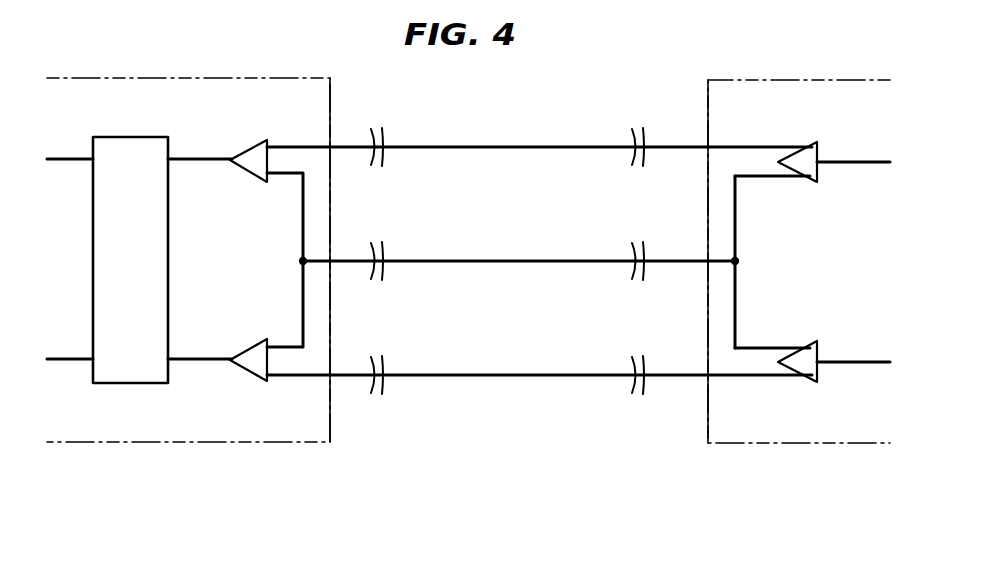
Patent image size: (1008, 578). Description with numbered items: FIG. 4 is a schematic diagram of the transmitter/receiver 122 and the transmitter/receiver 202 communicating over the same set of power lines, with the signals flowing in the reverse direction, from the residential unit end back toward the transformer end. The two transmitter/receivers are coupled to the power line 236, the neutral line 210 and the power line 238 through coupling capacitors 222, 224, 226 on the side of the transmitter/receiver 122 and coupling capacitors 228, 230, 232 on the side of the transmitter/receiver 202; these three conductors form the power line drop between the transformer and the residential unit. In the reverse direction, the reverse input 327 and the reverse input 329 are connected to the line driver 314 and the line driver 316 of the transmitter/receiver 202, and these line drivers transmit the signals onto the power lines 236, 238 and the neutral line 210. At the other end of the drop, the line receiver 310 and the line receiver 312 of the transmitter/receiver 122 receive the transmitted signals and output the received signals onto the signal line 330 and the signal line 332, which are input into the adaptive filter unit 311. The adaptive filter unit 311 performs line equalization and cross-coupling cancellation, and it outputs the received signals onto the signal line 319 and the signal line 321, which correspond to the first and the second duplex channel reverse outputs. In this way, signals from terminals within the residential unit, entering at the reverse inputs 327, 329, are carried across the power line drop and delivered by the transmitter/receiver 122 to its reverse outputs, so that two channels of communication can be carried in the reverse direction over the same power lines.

The transmitter/receiver 122 is at (256, 442).
The transmitter/receiver 202 is at (785, 443).
The adaptive filter unit 311 is at (128, 137).
The signal line 319 is at (72, 158).
The signal line 321 is at (72, 358).
The signal line 330 is at (193, 158).
The signal line 332 is at (193, 358).
The line receiver 310 is at (246, 170).
The line receiver 312 is at (247, 370).
The line driver 314 is at (816, 142).
The line driver 316 is at (816, 341).
The reverse input 327 is at (860, 162).
The reverse input 329 is at (866, 362).
The coupling capacitor 222 is at (382, 128).
The coupling capacitor 224 is at (382, 242).
The coupling capacitor 226 is at (382, 394).
The coupling capacitor 228 is at (643, 128).
The coupling capacitor 230 is at (643, 242).
The coupling capacitor 232 is at (643, 356).
The power line 236 is at (510, 147).
The neutral line 210 is at (513, 261).
The power line 238 is at (510, 375).